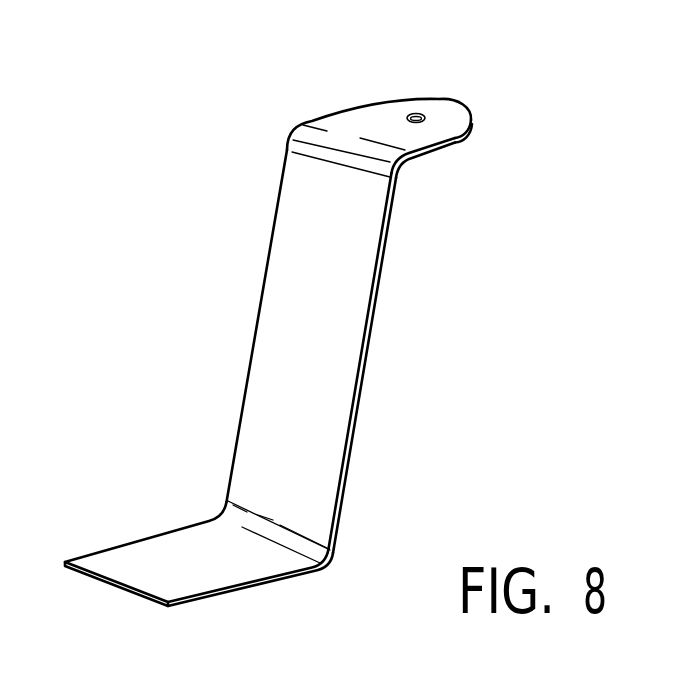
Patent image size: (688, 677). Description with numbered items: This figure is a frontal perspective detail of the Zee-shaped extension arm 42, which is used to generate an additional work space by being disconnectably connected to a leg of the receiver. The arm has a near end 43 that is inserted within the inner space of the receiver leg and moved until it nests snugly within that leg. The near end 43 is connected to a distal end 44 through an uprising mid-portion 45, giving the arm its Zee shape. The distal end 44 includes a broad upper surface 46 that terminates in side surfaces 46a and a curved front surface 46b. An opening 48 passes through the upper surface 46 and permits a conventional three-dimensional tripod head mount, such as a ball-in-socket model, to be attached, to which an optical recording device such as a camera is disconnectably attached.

The Zee-shaped extension arm 42 is at (321, 311).
The near end 43 is at (137, 568).
The distal end 44 is at (450, 105).
The uprising mid-portion 45 is at (220, 262).
The broad upper surface 46 is at (438, 108).
The side surfaces 46a is at (438, 151).
The curved front surface 46b is at (468, 108).
The opening 48 is at (385, 125).